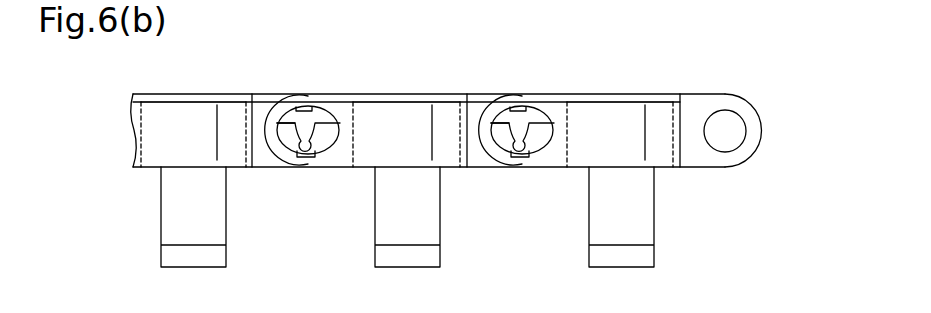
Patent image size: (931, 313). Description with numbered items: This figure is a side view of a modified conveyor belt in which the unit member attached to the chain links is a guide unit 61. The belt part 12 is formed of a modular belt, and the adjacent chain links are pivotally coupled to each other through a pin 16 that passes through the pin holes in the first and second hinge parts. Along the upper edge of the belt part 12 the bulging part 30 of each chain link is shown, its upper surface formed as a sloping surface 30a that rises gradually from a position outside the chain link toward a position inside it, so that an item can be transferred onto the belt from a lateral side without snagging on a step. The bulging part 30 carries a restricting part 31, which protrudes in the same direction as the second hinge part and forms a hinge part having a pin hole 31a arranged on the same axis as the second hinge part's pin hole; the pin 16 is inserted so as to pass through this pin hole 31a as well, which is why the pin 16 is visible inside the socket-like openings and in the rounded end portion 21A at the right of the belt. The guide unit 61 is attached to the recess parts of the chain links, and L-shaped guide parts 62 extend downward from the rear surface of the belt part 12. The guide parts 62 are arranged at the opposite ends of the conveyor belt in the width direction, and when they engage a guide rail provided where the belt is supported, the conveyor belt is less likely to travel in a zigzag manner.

The belt part 12 is at (577, 94).
The pin 16 is at (305, 120).
The rounded end portion 21A is at (752, 101).
The bulging part 30 is at (150, 157).
The sloping surface 30a is at (165, 98).
The restricting part 31 is at (299, 160).
The pin hole 31a is at (283, 140).
The guide unit 61 is at (248, 112).
The guide part 62 is at (227, 222).